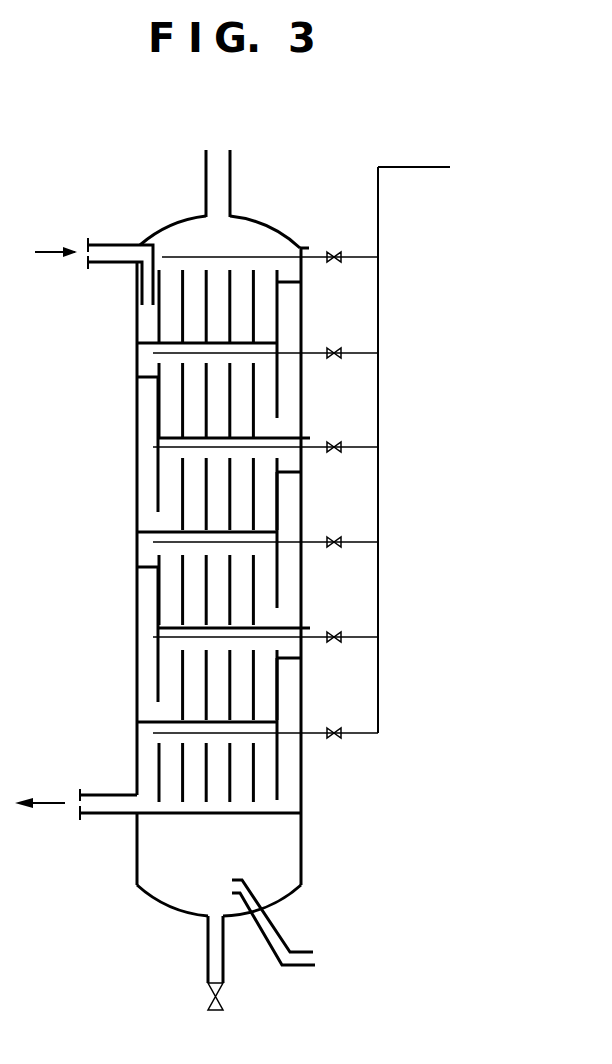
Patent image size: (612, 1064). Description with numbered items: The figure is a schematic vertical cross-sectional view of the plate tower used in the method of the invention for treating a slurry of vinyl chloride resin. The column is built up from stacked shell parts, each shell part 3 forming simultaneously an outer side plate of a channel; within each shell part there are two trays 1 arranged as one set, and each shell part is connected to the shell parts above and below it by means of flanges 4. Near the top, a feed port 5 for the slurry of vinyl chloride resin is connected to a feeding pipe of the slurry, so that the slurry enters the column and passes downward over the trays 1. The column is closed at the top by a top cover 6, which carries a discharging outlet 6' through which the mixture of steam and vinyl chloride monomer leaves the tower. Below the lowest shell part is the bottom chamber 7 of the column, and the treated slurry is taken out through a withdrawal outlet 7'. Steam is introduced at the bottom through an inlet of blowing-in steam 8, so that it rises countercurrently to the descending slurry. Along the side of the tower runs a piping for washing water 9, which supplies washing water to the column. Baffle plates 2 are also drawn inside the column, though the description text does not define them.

The trays 1 is at (264, 530).
The baffle plates 2 is at (278, 300).
The shell part 3 is at (133, 512).
The flanges 4 is at (133, 440).
The feed port 5 is at (100, 264).
The top cover 6 is at (220, 221).
The discharging outlet 6' is at (236, 183).
The bottom chamber 7 is at (219, 947).
The withdrawal outlet 7' is at (76, 829).
The inlet of blowing-in steam 8 is at (318, 958).
The piping for washing water 9 is at (378, 218).